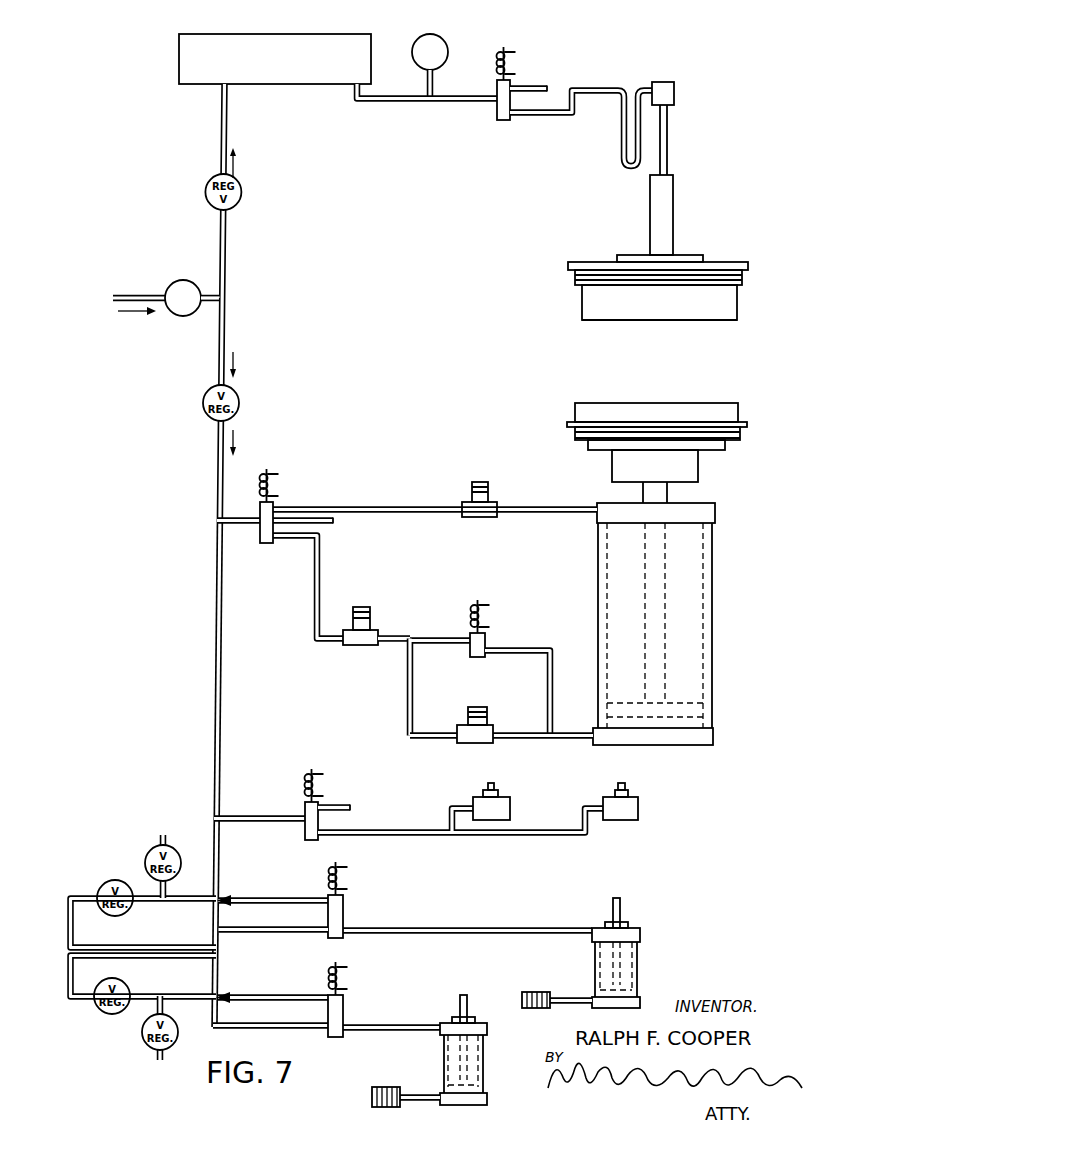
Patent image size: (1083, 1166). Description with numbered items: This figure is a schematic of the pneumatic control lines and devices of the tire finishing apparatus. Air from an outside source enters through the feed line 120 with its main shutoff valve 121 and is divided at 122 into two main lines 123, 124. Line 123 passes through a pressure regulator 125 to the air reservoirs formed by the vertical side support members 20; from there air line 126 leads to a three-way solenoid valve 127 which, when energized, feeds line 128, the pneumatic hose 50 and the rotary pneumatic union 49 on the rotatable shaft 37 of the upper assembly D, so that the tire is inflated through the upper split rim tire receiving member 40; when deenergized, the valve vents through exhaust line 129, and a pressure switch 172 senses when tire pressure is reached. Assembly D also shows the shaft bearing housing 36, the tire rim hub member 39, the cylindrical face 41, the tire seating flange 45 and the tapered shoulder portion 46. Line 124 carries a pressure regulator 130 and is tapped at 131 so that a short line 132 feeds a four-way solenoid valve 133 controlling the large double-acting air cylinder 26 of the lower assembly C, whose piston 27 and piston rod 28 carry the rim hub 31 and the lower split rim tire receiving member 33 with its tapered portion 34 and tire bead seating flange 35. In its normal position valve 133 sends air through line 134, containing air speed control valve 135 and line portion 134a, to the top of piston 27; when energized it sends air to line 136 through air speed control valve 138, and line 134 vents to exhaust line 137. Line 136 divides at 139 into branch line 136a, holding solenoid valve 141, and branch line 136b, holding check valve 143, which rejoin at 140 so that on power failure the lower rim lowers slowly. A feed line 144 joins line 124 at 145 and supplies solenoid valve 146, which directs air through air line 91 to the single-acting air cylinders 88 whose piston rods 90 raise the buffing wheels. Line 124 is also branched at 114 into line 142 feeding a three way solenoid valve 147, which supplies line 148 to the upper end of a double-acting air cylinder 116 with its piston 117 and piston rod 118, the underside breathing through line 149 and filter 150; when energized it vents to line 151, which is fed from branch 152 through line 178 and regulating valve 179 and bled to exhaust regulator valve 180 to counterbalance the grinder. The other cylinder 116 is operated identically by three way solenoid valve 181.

The vertical side support members 20 is at (298, 72).
The double-acting air cylinder 26 is at (712, 666).
The piston 27 is at (684, 703).
The piston rod 28 is at (665, 497).
The rim hub 31 is at (702, 450).
The lower split rim tire receiving member 33 is at (644, 403).
The tire bead base receiving tapered portion 34 is at (578, 408).
The tire bead seating flange 35 is at (745, 428).
The shaft bearing housing 36 is at (650, 230).
The rotatable shaft 37 is at (670, 152).
The tire rim hub member 39 is at (692, 262).
The upper split rim tire receiving member 40 is at (636, 322).
The cylindrical face 41 is at (738, 305).
The tire seating flange 45 is at (748, 268).
The tapered shoulder portion 46 is at (575, 283).
The rotary pneumatic union 49 is at (676, 95).
The pneumatic hose 50 is at (622, 172).
The single-acting air cylinder 88 is at (476, 800).
The piston rod 90 is at (488, 782).
The air line 91 is at (434, 838).
The branch point 114 is at (215, 927).
The double-acting air cylinder 116 is at (637, 950).
The piston 117 is at (622, 985).
The piston rod 118 is at (624, 910).
The feed line 120 is at (152, 290).
The main shutoff valve 121 is at (172, 316).
The division point 122 is at (225, 298).
The main line 123 is at (221, 246).
The main line 124 is at (218, 355).
The pressure regulator 125 is at (242, 202).
The air line 126 is at (410, 100).
The 3-way solenoid-operated spring return air valve 127 is at (497, 112).
The line 128 is at (560, 118).
The exhaust line 129 is at (530, 88).
The pressure regulator 130 is at (242, 400).
The tap 131 is at (222, 523).
The short line 132 is at (228, 525).
The 4-way solenoid operated spring return air valve 133 is at (266, 543).
The line 134 is at (380, 506).
The line portion 134a is at (545, 513).
The air speed control valve 135 is at (470, 500).
The line 136 is at (318, 596).
The branch line 136a is at (510, 650).
The branch line 136b is at (408, 712).
The exhaust line 137 is at (330, 526).
The air speed control valve 138 is at (372, 630).
The branch point 139 is at (410, 638).
The junction 140 is at (547, 738).
The solenoid-operated spring return valve 141 is at (470, 650).
The line 142 is at (268, 932).
The check valve 143 is at (490, 718).
The feed line 144 is at (280, 820).
The connection point 145 is at (208, 816).
The solenoid operated spring return valve 146 is at (304, 836).
The three way solenoid valve 147 is at (343, 910).
The line 148 is at (340, 806).
The line 149 is at (592, 997).
The filter 150 is at (528, 991).
The line 151 is at (246, 900).
The branch point 152 is at (213, 948).
The pressure switch 172 is at (445, 42).
The line 178 is at (143, 950).
The regulating valve 179 is at (98, 888).
The exhaust regulator valve 180 is at (146, 856).
The three way solenoid valve 181 is at (343, 1012).
The lower tire support assembly C is at (662, 557).
The upper tire mounting, rotating and inflation assembly D is at (665, 229).